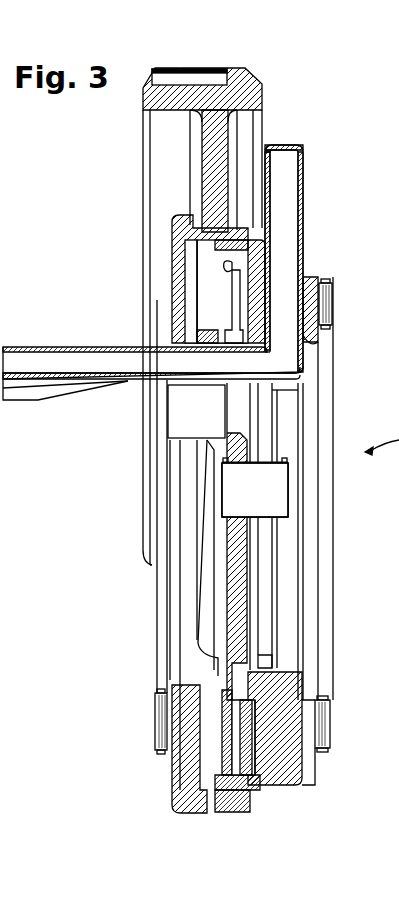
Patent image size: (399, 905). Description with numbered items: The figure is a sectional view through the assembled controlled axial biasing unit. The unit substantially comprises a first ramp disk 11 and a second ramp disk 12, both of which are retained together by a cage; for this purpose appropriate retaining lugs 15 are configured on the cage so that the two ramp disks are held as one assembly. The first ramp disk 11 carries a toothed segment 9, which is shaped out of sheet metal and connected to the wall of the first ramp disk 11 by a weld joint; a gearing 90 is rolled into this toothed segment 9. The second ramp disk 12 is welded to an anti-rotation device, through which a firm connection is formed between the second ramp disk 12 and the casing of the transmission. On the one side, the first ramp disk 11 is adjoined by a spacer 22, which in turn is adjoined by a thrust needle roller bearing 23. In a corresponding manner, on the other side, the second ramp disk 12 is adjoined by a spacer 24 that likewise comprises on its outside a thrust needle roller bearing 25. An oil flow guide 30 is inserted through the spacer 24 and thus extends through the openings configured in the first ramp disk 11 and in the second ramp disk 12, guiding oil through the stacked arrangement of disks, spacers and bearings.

The toothed segment 9 is at (237, 86).
The gearing 90 is at (188, 77).
The first ramp disk 11 is at (185, 240).
The second ramp disk 12 is at (270, 258).
The oil flow guide 30 is at (86, 347).
The thrust needle roller bearing 25 is at (333, 300).
The spacer 24 is at (285, 406).
The retaining lugs 15 is at (200, 425).
The thrust needle roller bearing 23 is at (160, 612).
The spacer 22 is at (175, 776).